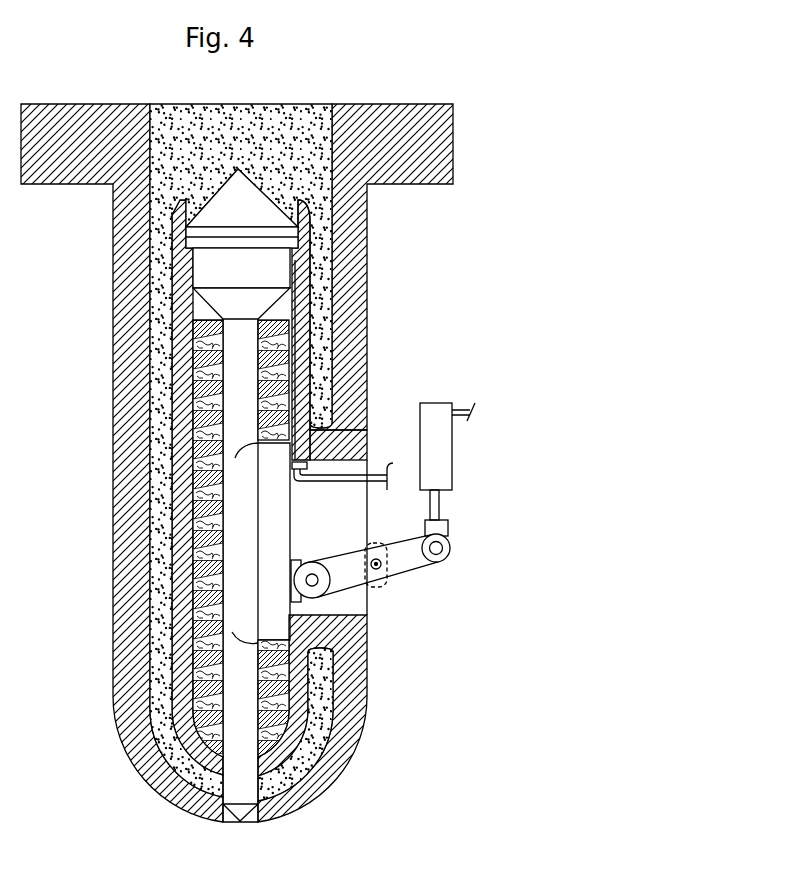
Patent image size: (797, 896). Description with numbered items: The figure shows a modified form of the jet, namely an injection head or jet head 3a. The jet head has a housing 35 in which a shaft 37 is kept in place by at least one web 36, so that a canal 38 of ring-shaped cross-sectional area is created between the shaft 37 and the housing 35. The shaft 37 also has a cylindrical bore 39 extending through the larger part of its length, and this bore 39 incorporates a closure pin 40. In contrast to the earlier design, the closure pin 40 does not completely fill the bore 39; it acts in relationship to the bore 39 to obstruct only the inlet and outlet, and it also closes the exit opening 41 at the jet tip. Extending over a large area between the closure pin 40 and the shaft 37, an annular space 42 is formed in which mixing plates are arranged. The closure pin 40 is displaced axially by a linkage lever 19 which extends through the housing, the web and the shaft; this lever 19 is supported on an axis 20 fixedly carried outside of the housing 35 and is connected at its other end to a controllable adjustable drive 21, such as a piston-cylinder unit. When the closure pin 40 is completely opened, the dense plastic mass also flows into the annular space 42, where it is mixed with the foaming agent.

The jet head 3a is at (368, 744).
The linkage lever 19 is at (413, 562).
The axis 20 is at (379, 567).
The controllable adjustable drive 21 is at (447, 458).
The housing 35 is at (322, 775).
The web 36 is at (360, 433).
The shaft 37 is at (312, 245).
The canal 38 is at (320, 282).
The cylindrical bore 39 is at (197, 552).
The closure pin 40 is at (232, 716).
The exit opening 41 is at (250, 818).
The annular space 42 is at (280, 392).